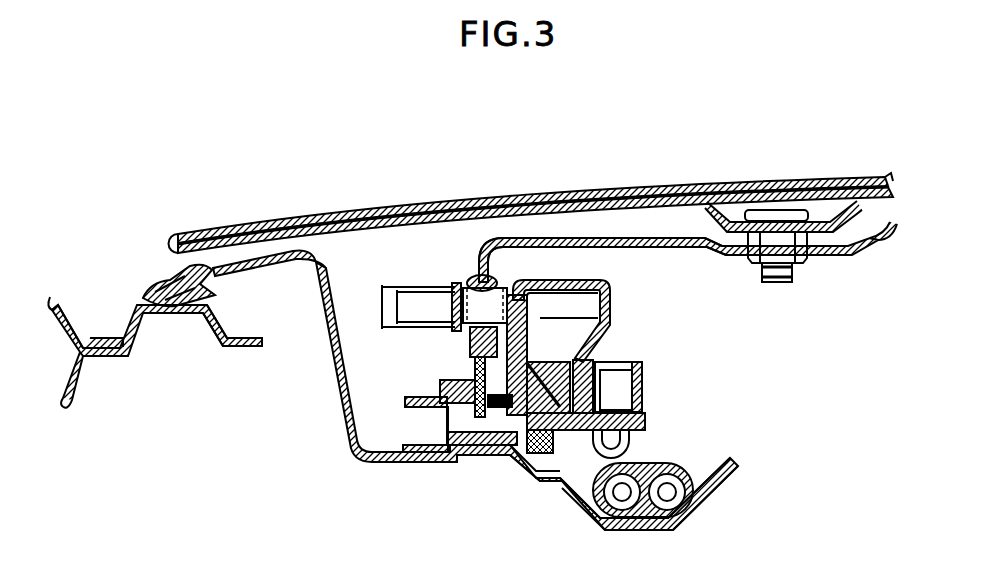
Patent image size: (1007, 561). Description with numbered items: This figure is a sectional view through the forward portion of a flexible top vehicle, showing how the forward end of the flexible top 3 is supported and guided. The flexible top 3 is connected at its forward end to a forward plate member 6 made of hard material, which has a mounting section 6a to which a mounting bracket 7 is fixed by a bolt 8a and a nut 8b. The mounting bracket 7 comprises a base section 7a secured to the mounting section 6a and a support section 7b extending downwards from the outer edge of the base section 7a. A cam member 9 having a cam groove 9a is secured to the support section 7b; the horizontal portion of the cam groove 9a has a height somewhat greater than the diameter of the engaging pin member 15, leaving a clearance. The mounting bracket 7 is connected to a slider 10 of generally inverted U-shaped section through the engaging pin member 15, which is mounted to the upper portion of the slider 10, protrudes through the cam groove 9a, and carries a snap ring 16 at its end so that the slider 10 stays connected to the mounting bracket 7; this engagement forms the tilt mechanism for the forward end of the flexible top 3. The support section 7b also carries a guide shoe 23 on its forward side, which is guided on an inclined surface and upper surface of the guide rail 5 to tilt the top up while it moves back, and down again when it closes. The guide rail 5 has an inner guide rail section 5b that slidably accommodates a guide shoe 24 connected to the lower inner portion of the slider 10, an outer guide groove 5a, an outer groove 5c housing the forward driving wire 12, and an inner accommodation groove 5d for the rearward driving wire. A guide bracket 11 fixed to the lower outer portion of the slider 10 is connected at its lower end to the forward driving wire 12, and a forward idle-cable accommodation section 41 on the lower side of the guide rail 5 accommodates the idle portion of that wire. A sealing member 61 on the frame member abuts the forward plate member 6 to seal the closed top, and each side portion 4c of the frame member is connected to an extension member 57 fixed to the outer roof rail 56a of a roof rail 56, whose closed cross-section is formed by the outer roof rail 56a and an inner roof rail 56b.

The flexible top 3 is at (727, 185).
The side portion of the frame member 4c is at (263, 267).
The guide rail 5 is at (410, 398).
The outer guide groove 5a is at (535, 376).
The inner guide rail section 5b is at (625, 355).
The outer groove 5c is at (520, 478).
The inner accommodation groove 5d is at (624, 440).
The forward plate member 6 is at (630, 189).
The mounting section 6a is at (880, 250).
The mounting bracket 7 is at (717, 255).
The base section 7a is at (705, 248).
The support section 7b is at (503, 243).
The bolt 8a is at (793, 208).
The nut 8b is at (812, 250).
The cam member 9 is at (470, 355).
The cam groove 9a is at (447, 325).
The slider 10 is at (594, 286).
The guide bracket 11 is at (524, 292).
The forward driving wire 12 is at (553, 447).
The engaging pin member 15 is at (452, 297).
The snap ring 16 is at (468, 288).
The guide shoe 23 is at (497, 408).
The guide shoe 24 is at (627, 388).
The forward idle-cable accommodation section 41 is at (680, 468).
The roof rail 56 is at (78, 405).
The outer roof rail 56a is at (58, 303).
The inner roof rail 56b is at (82, 367).
The extension member 57 is at (233, 350).
The sealing member 61 is at (148, 288).